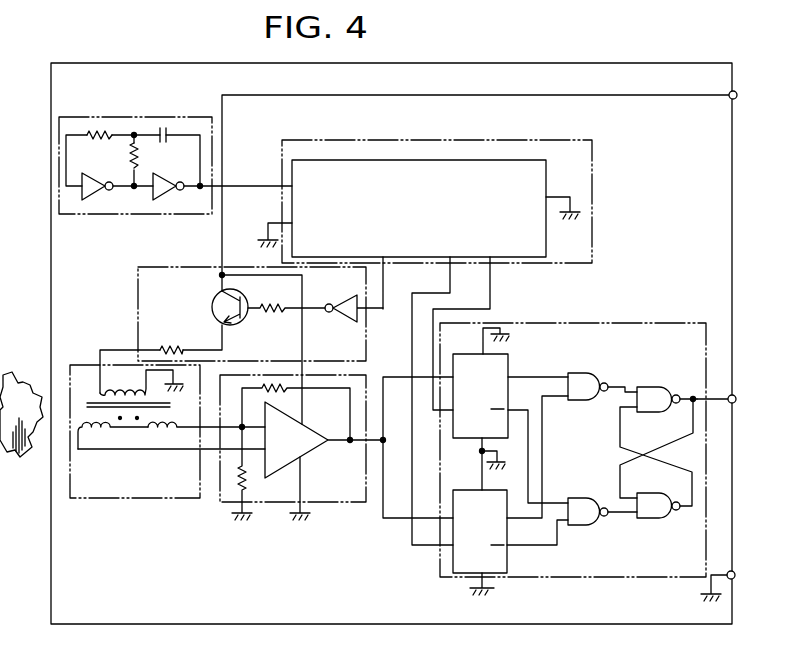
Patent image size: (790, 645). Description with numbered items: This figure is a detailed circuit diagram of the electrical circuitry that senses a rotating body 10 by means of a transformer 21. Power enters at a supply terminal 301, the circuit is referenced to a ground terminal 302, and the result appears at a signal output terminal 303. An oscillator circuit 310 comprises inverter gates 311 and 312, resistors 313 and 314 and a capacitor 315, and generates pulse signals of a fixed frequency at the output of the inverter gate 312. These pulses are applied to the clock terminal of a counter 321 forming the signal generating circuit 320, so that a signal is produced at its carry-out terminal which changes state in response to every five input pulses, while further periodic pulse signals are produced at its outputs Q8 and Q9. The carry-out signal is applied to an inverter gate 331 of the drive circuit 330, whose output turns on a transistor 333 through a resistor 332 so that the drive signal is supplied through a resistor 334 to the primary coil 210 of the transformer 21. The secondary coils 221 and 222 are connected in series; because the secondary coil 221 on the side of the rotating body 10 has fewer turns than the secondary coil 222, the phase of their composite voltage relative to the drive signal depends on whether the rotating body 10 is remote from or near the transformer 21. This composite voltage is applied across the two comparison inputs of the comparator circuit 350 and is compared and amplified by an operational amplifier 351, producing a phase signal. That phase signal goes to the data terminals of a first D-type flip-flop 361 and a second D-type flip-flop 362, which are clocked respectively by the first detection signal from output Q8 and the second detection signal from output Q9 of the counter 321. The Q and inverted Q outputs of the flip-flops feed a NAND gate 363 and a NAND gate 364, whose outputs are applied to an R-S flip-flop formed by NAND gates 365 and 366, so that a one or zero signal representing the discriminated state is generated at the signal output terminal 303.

The rotating body 10 is at (23, 382).
The transformer 21 is at (150, 426).
The primary coil 210 is at (93, 392).
The secondary coil 221 is at (102, 429).
The secondary coil 222 is at (158, 429).
The supply terminal 301 is at (736, 98).
The ground terminal 302 is at (734, 578).
The signal output terminal 303 is at (735, 402).
The oscillator circuit 310 is at (175, 164).
The inverter gate 311 is at (97, 206).
The inverter gate 312 is at (165, 206).
The resistor 313 is at (92, 153).
The resistor 314 is at (156, 159).
The capacitor 315 is at (163, 128).
The signal generating circuit 320 is at (425, 185).
The counter 321 is at (382, 160).
The drive circuit 330 is at (226, 345).
The inverter gate 331 is at (338, 318).
The resistor 332 is at (272, 316).
The transistor 333 is at (212, 296).
The resistor 334 is at (182, 330).
The comparator circuit 350 is at (301, 459).
The operational amplifier 351 is at (322, 418).
The first D-type flip-flop 361 is at (509, 360).
The second D-type flip-flop 362 is at (508, 568).
The NAND gate 363 is at (585, 352).
The NAND gate 364 is at (597, 526).
The NAND gate 365 is at (648, 362).
The NAND gate 366 is at (657, 520).